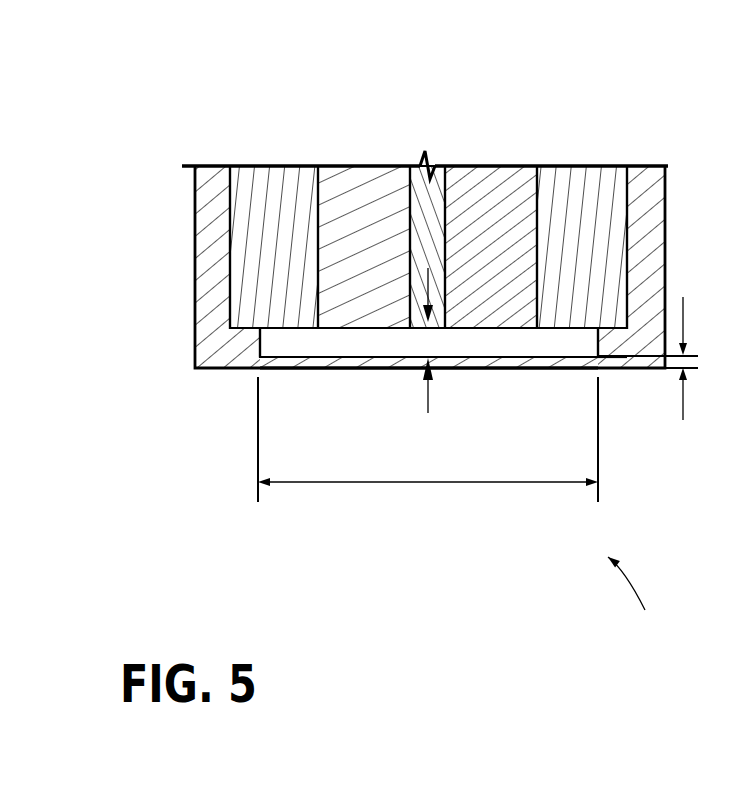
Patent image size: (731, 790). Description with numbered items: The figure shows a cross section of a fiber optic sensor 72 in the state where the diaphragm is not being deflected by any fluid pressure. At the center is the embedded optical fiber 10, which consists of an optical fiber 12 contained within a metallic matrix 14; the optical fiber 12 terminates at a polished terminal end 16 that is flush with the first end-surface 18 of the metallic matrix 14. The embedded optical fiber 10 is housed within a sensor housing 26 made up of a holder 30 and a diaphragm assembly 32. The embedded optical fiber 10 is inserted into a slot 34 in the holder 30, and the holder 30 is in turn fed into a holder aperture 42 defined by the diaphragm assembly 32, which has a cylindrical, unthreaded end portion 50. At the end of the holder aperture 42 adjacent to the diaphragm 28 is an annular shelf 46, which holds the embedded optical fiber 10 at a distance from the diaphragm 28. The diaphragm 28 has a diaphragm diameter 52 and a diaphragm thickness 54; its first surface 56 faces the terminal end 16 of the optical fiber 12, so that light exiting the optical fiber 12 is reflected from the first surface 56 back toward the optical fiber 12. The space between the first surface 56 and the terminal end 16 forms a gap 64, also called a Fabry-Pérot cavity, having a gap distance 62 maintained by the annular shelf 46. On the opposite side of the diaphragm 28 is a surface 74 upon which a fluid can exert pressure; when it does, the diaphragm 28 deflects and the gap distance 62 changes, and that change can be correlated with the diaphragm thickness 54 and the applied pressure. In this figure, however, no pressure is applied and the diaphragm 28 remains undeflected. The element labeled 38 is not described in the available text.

The embedded optical fiber 10 is at (475, 140).
The optical fiber 12 is at (423, 205).
The metallic matrix 14 is at (514, 195).
The terminal end 16 is at (443, 326).
The first end-surface 18 is at (515, 328).
The sensor housing 26 is at (592, 148).
The diaphragm 28 is at (292, 357).
The holder 30 is at (277, 195).
The diaphragm assembly 32 is at (653, 198).
The slot 34 is at (398, 203).
The step 38 is at (600, 362).
The holder aperture 42 is at (227, 193).
The annular shelf 46 is at (257, 327).
The end portion 50 is at (185, 260).
The diaphragm diameter 52 is at (417, 482).
The diaphragm thickness 54 is at (685, 407).
The first surface 56 is at (352, 345).
The gap distance 62 is at (427, 388).
The gap 64 is at (430, 340).
The fiber optic sensor 72 is at (643, 599).
The surface 74 is at (351, 343).